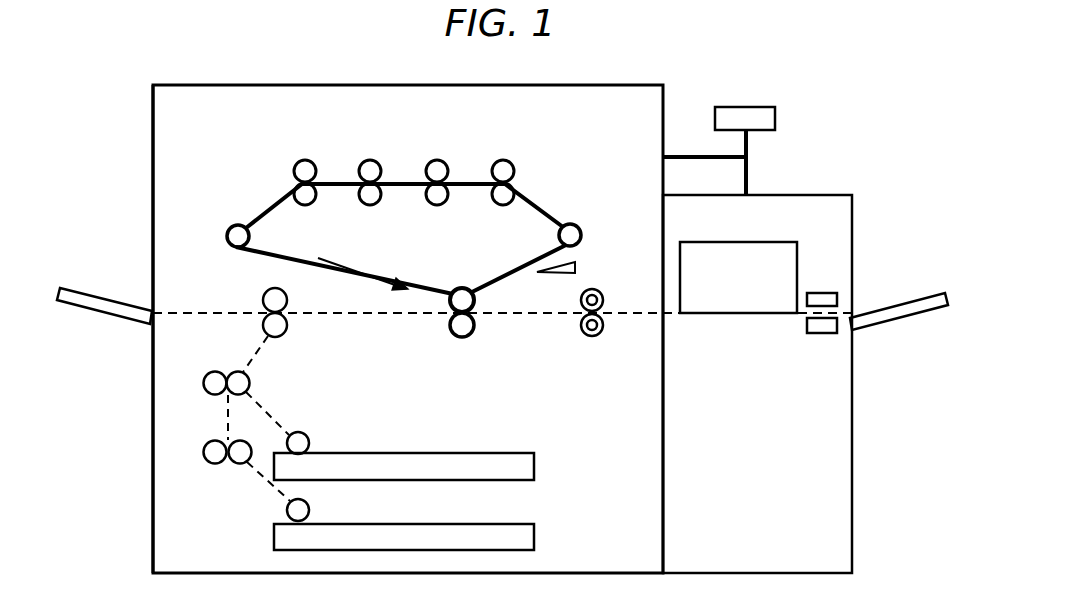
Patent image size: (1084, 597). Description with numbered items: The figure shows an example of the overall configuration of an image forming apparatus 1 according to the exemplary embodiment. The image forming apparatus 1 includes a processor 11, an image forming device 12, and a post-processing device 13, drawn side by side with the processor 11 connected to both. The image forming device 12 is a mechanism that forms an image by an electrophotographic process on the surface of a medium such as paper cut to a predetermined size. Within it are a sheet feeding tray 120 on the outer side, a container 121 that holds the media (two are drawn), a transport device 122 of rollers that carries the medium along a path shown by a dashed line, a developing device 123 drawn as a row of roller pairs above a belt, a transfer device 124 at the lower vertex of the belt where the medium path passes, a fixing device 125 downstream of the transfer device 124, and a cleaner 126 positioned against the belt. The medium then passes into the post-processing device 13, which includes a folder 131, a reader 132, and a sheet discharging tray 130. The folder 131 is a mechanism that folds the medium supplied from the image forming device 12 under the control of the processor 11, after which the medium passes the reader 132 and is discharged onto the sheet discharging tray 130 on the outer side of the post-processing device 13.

The image forming apparatus 1 is at (862, 148).
The processor 11 is at (777, 118).
The image forming device 12 is at (151, 412).
The post-processing device 13 is at (852, 480).
The sheet feeding tray 120 is at (97, 290).
The container 121 is at (535, 465).
The transport device 122 is at (250, 384).
The developing device 123 is at (280, 157).
The transfer device 124 is at (459, 288).
The fixing device 125 is at (592, 337).
The cleaner 126 is at (578, 268).
The sheet discharging tray 130 is at (898, 298).
The folder 131 is at (730, 315).
The reader 132 is at (818, 335).